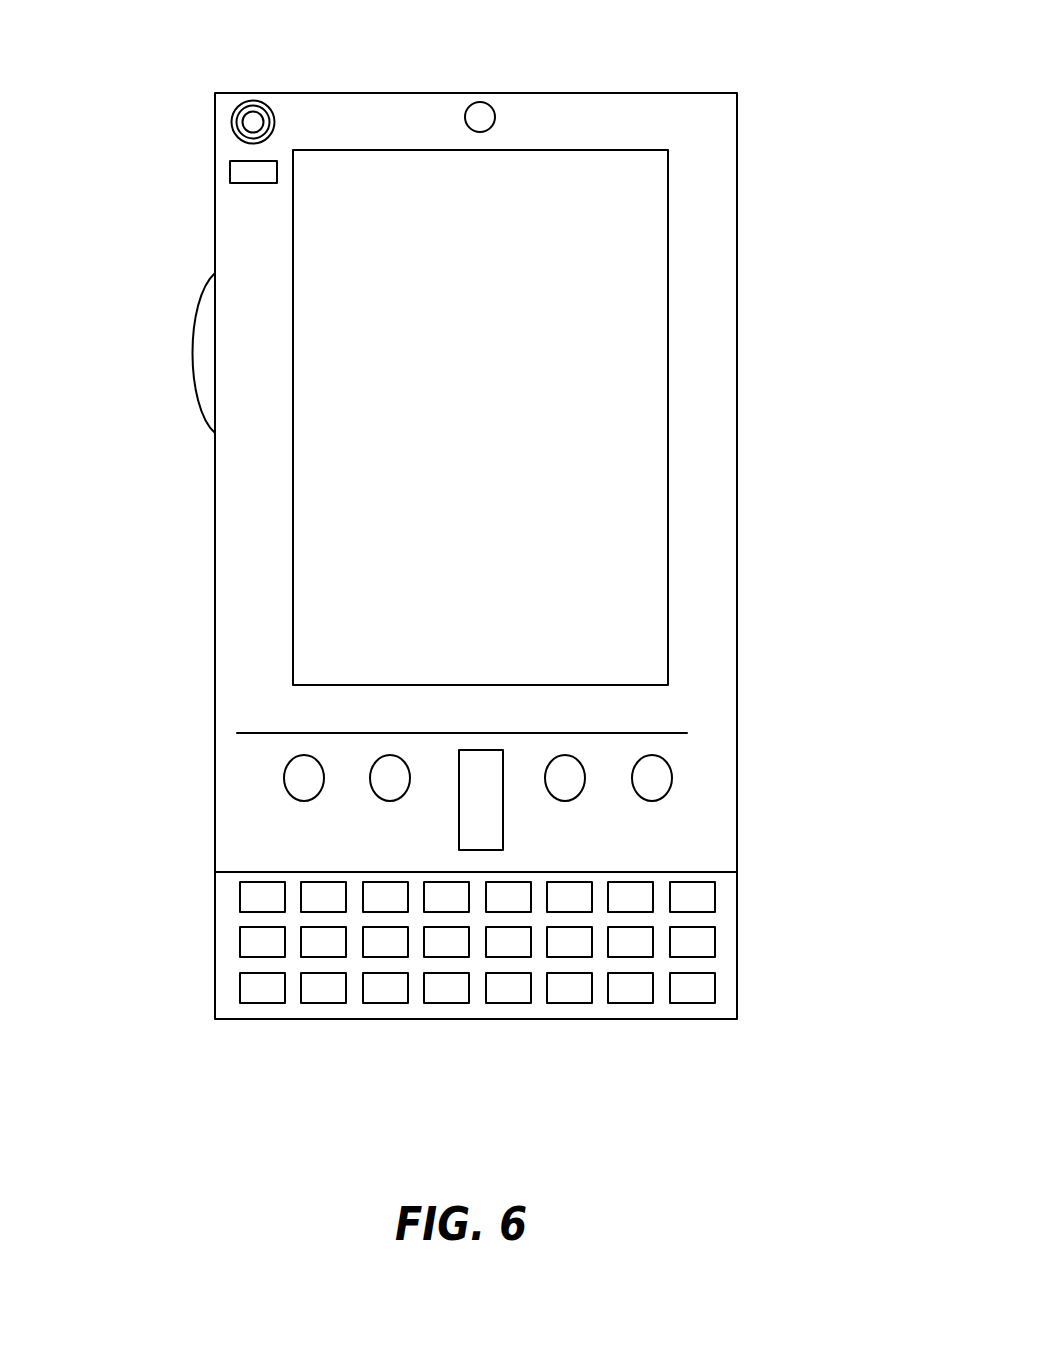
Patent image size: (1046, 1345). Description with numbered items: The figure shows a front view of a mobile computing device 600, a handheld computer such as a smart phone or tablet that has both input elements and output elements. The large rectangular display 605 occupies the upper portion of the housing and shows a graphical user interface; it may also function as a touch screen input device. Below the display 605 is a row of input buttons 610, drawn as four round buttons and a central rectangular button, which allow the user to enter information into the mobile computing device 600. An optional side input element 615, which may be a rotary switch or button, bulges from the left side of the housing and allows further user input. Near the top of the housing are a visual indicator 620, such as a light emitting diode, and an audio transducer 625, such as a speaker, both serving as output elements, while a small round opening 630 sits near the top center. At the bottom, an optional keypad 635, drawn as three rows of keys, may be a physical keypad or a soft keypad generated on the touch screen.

The mobile computing device 600 is at (723, 112).
The display 605 is at (408, 594).
The input buttons 610 is at (480, 805).
The side input element 615 is at (205, 354).
The visual indicator 620 is at (232, 178).
The audio transducer 625 is at (232, 122).
The speaker 630 is at (490, 117).
The keypad 635 is at (225, 993).